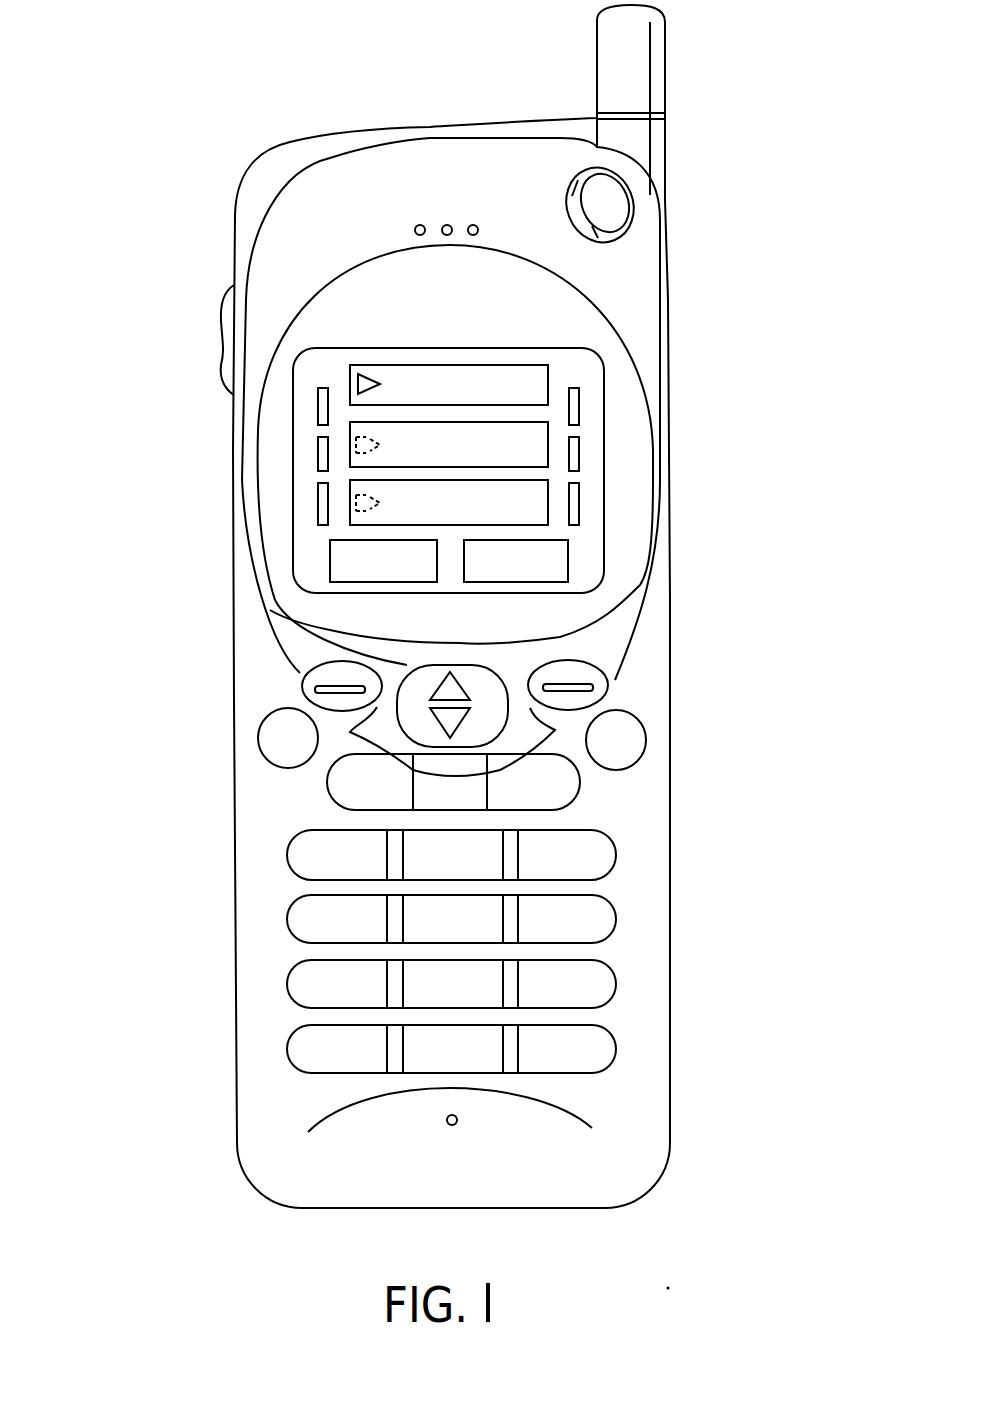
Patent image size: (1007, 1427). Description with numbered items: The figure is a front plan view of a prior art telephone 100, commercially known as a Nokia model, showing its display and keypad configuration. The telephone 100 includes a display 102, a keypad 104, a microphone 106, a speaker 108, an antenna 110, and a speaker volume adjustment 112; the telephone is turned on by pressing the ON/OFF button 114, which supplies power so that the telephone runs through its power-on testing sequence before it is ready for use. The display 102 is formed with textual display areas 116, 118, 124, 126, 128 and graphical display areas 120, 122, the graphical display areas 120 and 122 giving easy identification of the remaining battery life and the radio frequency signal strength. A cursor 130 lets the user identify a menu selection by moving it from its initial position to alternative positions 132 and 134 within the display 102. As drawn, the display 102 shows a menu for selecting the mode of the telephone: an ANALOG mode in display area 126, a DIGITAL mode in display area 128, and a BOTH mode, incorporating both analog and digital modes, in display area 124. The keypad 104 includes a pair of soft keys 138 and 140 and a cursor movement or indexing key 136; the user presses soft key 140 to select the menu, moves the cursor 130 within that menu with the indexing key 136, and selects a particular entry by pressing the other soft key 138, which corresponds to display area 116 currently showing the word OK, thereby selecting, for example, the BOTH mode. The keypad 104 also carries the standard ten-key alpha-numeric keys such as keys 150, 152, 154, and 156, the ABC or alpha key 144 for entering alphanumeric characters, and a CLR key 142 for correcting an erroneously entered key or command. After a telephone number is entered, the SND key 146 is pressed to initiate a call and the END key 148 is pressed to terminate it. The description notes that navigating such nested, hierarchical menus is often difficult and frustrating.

The telephone 100 is at (256, 153).
The display 102 is at (548, 342).
The keypad 104 is at (489, 951).
The microphone 106 is at (458, 1124).
The speaker 108 is at (447, 225).
The antenna 110 is at (665, 72).
The speaker volume adjustment 112 is at (221, 300).
The ON/OFF button 114 is at (619, 206).
The textual display area 116 is at (330, 560).
The textual display area 118 is at (568, 562).
The graphical display area 120 is at (318, 405).
The graphical display area 122 is at (580, 405).
The textual display area 124 is at (548, 378).
The textual display area 126 is at (548, 450).
The textual display area 128 is at (548, 505).
The cursor 130 is at (358, 382).
The alternative cursor position 132 is at (358, 445).
The alternative cursor position 134 is at (358, 505).
The indexing key 136 is at (407, 668).
The soft key 138 is at (308, 688).
The soft key 140 is at (600, 686).
The CLR key 142 is at (258, 738).
The ABC key 144 is at (646, 740).
The SND key 146 is at (328, 788).
The END key 148 is at (578, 780).
The alpha-numeric key 150 is at (290, 855).
The alpha-numeric key 152 is at (612, 984).
The alpha-numeric key 154 is at (290, 1048).
The alpha-numeric key 156 is at (614, 1044).